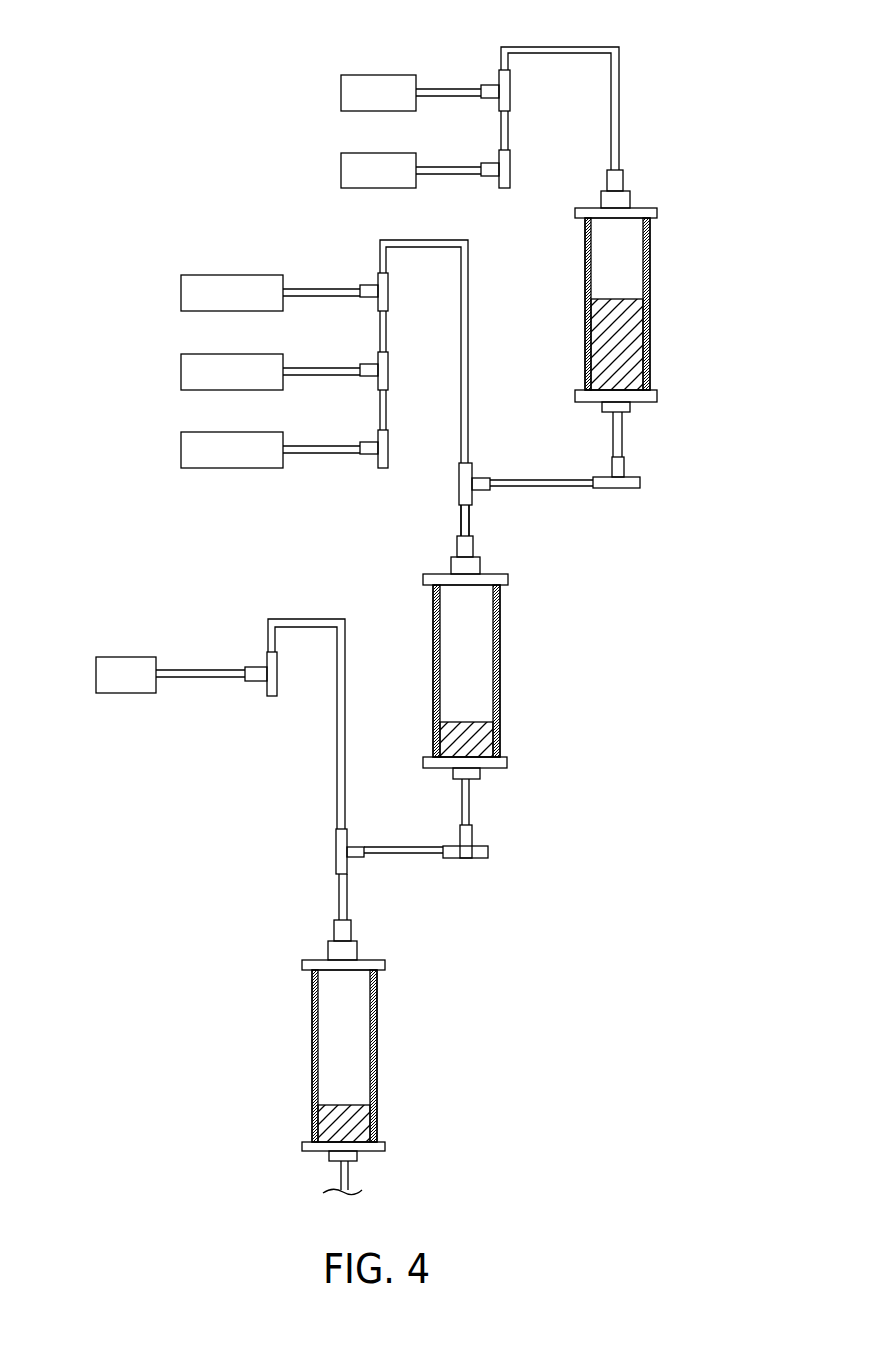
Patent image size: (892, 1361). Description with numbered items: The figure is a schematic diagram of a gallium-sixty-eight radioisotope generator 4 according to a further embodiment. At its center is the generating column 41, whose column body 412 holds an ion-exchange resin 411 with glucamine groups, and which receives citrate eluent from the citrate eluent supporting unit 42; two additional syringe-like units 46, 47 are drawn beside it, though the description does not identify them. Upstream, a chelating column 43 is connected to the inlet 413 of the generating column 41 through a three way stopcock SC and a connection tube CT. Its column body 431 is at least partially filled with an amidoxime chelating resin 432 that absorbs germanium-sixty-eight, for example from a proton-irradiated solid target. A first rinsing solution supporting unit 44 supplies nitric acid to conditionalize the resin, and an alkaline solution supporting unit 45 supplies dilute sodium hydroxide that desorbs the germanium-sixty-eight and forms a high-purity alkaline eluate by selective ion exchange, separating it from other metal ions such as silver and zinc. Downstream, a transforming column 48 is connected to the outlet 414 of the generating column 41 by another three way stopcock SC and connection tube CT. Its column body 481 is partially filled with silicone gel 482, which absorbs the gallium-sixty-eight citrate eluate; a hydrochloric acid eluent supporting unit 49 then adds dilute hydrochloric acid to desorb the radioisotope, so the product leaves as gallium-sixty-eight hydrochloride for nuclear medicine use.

The Ga-68 radioisotope generator 4 is at (133, 155).
The generating column 41 is at (517, 622).
The ion-exchange resin with glucamine groups 411 is at (480, 738).
The column body 412 is at (498, 669).
The inlet 413 is at (465, 525).
The outlet 414 is at (467, 811).
The citrate eluent supporting unit 42 is at (190, 451).
The chelating column 43 is at (666, 236).
The column body 431 is at (650, 291).
The amidoxime chelating resin 432 is at (638, 365).
The first rinsing solution supporting unit 44 is at (351, 173).
The alkaline solution supporting unit 45 is at (351, 95).
The reservoir 46 is at (190, 294).
The reservoir 47 is at (190, 373).
The transforming column 48 is at (392, 984).
The column body 481 is at (372, 1040).
The silicone gel 482 is at (360, 1118).
The hydrochloric acid eluent supporting unit 49 is at (104, 678).
The connection tube CT is at (566, 50).
The three way stopcock SC is at (463, 498).